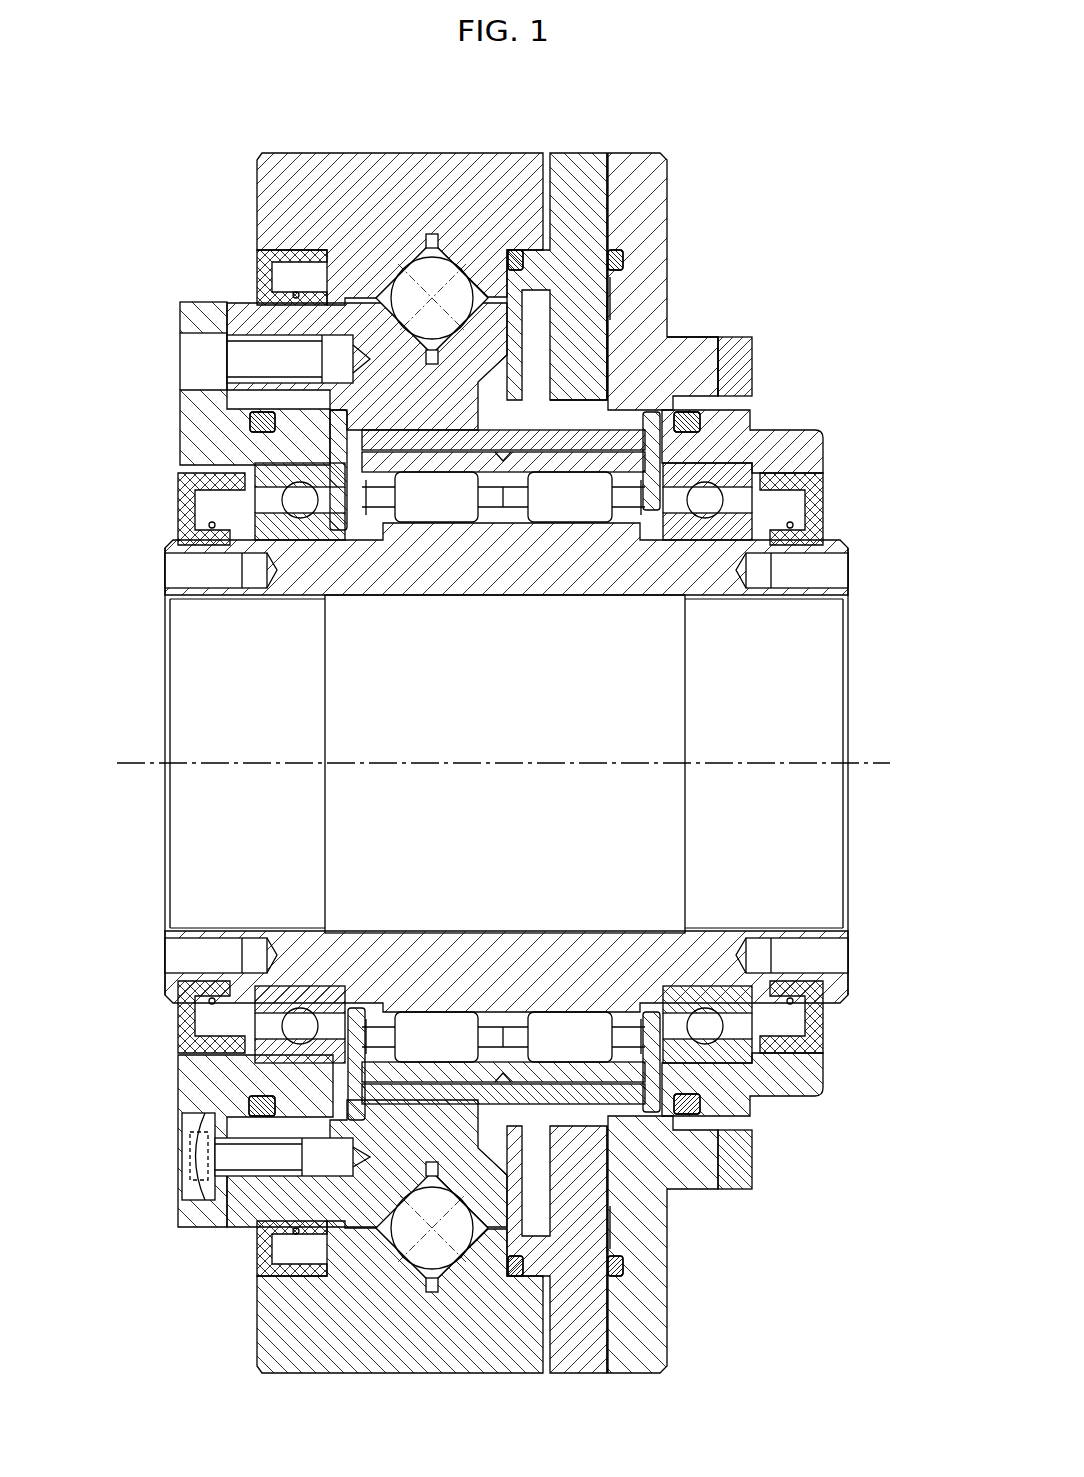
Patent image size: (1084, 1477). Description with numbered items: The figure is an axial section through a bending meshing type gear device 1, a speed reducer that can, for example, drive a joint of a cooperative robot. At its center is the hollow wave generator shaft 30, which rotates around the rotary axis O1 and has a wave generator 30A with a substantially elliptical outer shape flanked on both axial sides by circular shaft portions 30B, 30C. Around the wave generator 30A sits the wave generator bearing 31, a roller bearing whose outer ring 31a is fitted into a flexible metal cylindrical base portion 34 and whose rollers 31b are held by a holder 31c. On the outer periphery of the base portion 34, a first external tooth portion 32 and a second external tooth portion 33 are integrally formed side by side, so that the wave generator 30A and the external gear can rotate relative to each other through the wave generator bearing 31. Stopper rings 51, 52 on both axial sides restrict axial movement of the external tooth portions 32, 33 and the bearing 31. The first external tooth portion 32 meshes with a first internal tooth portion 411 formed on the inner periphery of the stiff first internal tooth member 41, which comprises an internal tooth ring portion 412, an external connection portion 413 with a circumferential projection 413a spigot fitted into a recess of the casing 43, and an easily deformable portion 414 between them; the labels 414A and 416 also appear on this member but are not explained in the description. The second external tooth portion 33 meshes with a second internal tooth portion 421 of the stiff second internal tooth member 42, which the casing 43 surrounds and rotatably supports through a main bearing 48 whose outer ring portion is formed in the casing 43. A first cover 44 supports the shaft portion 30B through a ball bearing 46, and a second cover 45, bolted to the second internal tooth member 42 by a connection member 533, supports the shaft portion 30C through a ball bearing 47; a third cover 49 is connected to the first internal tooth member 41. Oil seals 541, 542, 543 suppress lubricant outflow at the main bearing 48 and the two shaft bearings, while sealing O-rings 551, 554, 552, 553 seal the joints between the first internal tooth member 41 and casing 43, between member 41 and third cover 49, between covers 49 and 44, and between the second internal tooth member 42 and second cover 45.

The bending meshing type gear device 1 is at (499, 738).
The wave generator shaft 30 is at (522, 767).
The wave generator 30A is at (640, 908).
The shaft portion 30B is at (835, 908).
The shaft portion 30C is at (170, 908).
The rotary axis O1 is at (522, 764).
The wave generator bearing 31 is at (509, 767).
The outer ring 31a is at (538, 462).
The rolling elements 31b is at (433, 515).
The holder 31c is at (655, 660).
The first external tooth portion 32 is at (545, 430).
The second external tooth portion 33 is at (327, 528).
The base portion 34 is at (702, 422).
The first internal tooth member 41 is at (693, 741).
The first internal tooth portion 411 is at (745, 342).
The internal tooth ring portion 412 is at (673, 340).
The external connection portion 413 is at (597, 207).
The projection 413a is at (515, 252).
The wall portion 414A is at (578, 360).
The easily deformable portion 414 is at (598, 1194).
The gap 416 is at (610, 290).
The second internal tooth member 42 is at (293, 318).
The second internal tooth portion 421 is at (337, 297).
The casing 43 is at (411, 153).
The first cover 44 is at (824, 460).
The second cover 45 is at (180, 428).
The bearing 46 is at (727, 498).
The bearing 47 is at (284, 495).
The main bearing 48 is at (434, 298).
The third cover 49 is at (668, 176).
The stopper ring 51 is at (742, 387).
The stopper ring 52 is at (333, 387).
The connection member 533 is at (195, 1185).
The oil seal 541 is at (257, 1258).
The oil seal 542 is at (825, 1018).
The oil seal 543 is at (178, 1018).
The sealing O-ring 551 is at (523, 1268).
The sealing O-ring 552 is at (702, 1106).
The sealing O-ring 553 is at (250, 1104).
The sealing O-ring 554 is at (625, 1270).